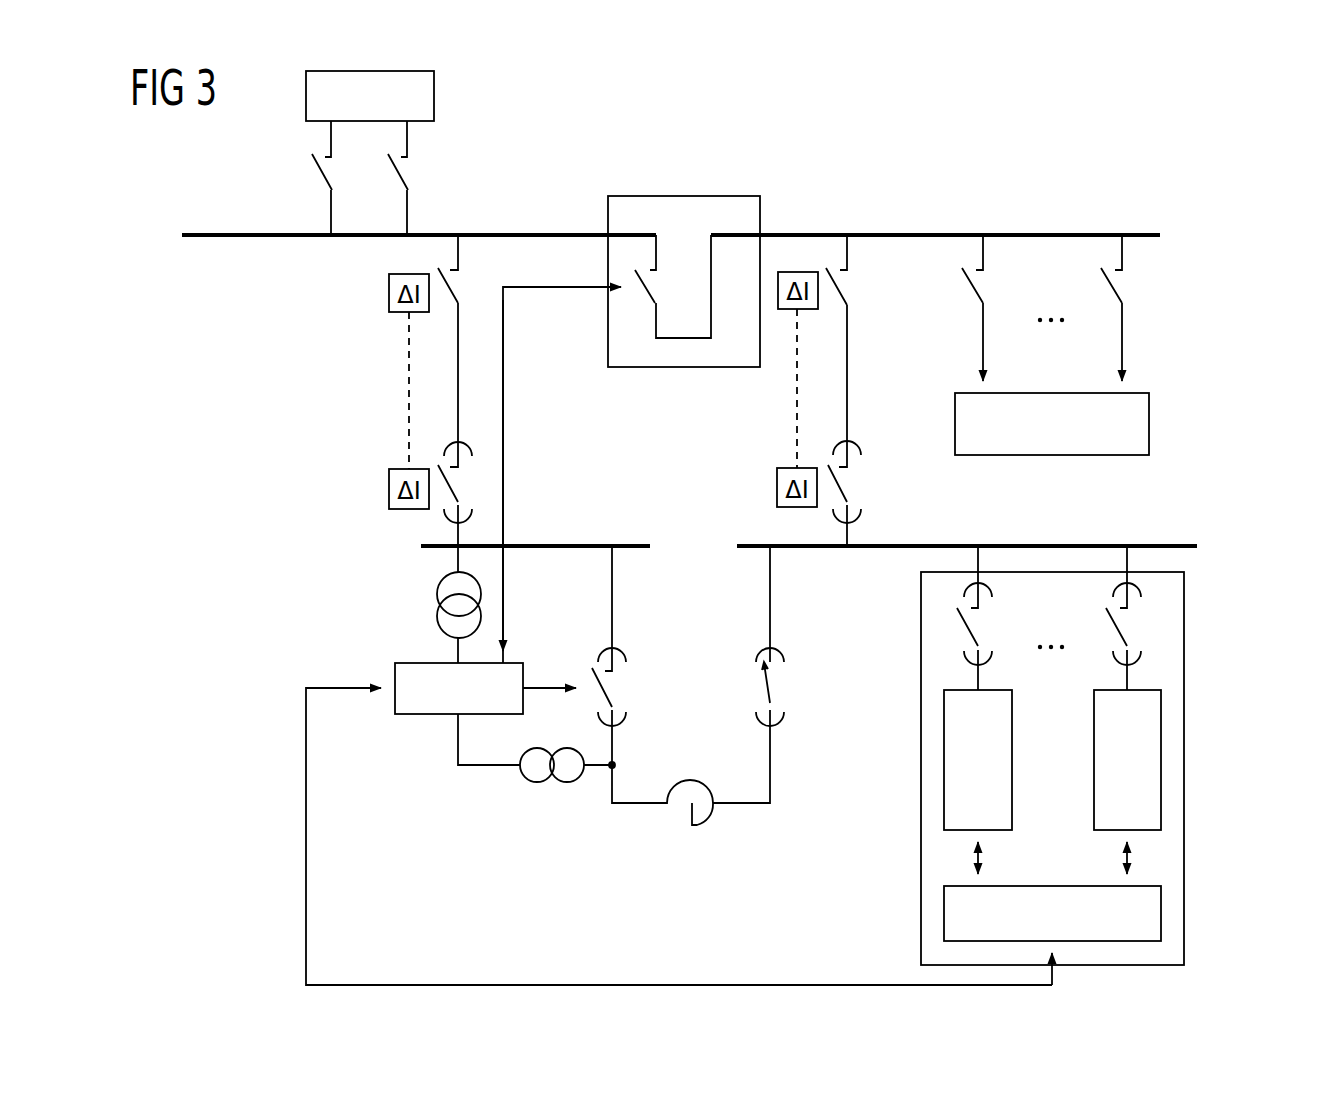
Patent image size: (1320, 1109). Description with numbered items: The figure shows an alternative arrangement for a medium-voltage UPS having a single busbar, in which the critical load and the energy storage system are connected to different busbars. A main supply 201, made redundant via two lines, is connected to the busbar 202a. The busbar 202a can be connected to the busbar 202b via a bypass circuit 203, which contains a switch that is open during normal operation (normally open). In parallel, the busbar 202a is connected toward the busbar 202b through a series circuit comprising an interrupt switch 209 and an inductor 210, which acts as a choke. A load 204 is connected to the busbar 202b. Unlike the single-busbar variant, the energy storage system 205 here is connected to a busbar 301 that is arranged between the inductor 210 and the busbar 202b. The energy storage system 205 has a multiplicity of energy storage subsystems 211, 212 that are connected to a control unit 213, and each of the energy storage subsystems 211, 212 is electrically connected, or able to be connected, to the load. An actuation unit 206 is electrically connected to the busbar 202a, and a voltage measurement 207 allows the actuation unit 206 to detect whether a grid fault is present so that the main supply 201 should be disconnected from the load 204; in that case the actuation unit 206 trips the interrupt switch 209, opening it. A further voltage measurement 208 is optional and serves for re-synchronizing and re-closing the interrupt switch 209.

The main supply 201 is at (434, 96).
The busbar 202a is at (240, 233).
The busbar 202b is at (913, 234).
The bypass circuit 203 is at (680, 196).
The load 204 is at (1149, 425).
The energy storage system 205 is at (1184, 855).
The actuation unit 206 is at (422, 714).
The voltage measurement 207 is at (438, 583).
The voltage measurement 208 is at (537, 782).
The interrupt switch 209 is at (610, 686).
The inductor 210 is at (717, 815).
The energy storage subsystem 211 is at (944, 755).
The energy storage subsystem 212 is at (1161, 755).
The control unit 213 is at (944, 915).
The busbar 301 is at (1188, 546).